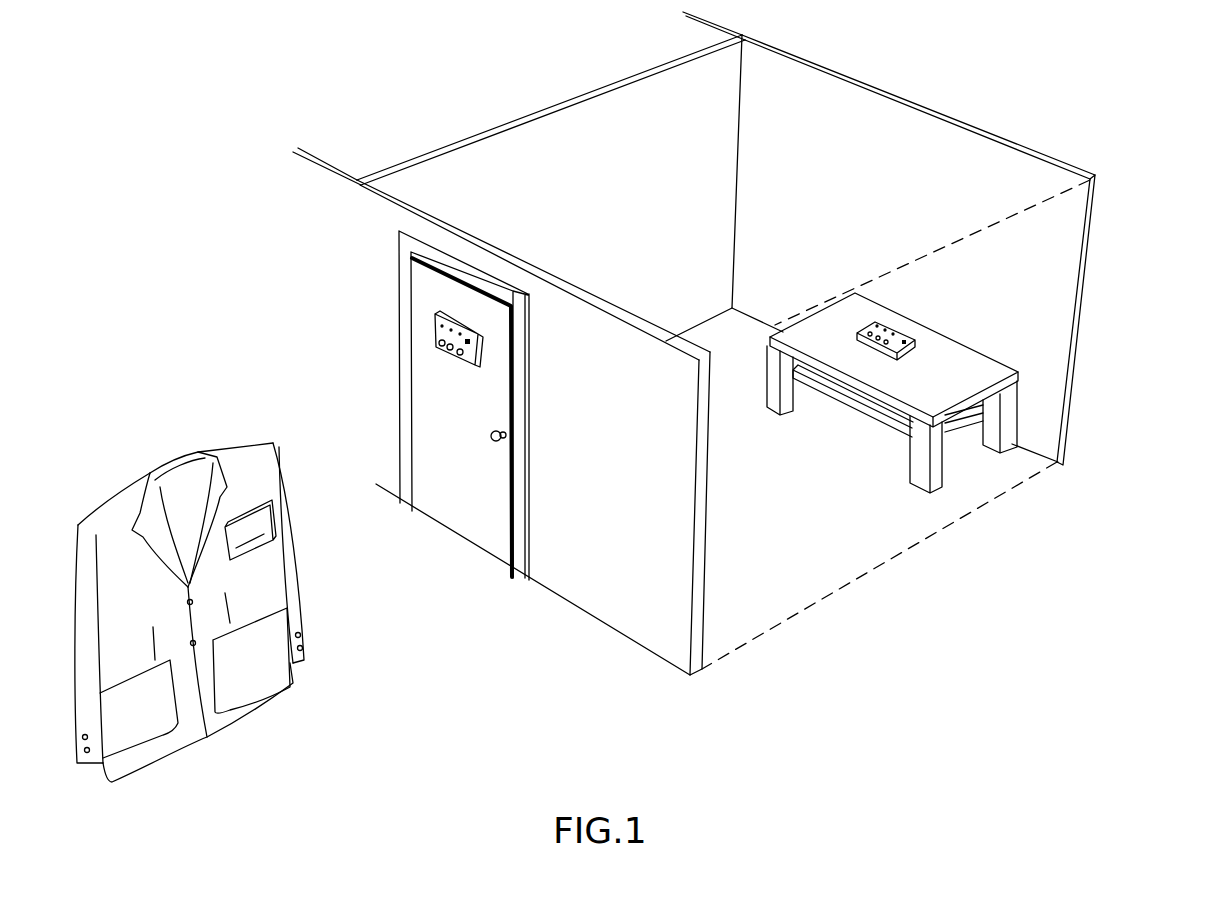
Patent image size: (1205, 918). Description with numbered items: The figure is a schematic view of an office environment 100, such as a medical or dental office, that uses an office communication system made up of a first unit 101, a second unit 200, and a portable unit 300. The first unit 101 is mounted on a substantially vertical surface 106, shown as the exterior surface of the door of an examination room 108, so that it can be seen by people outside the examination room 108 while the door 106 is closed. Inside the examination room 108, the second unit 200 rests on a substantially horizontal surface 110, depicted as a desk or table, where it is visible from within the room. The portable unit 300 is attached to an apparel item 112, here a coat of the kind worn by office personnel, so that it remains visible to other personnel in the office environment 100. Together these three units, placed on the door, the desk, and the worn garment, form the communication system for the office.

The office environment 100 is at (1040, 293).
The first unit 101 is at (433, 333).
The substantially vertical surface 106 is at (482, 492).
The examination room 108 is at (620, 538).
The substantially horizontal surface 110 is at (978, 385).
The apparel item 112 is at (267, 593).
The second unit 200 is at (893, 327).
The portable unit 300 is at (268, 544).